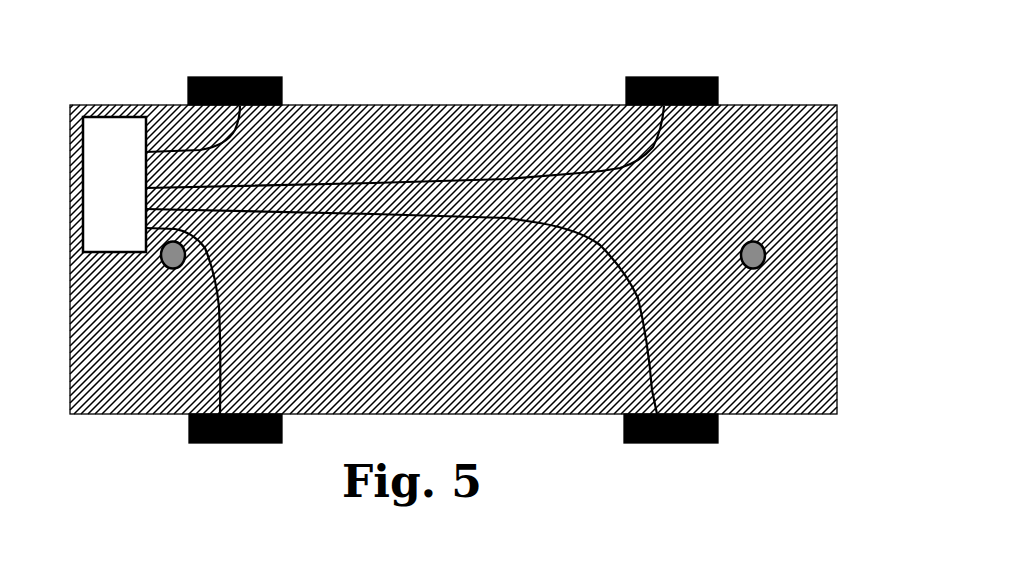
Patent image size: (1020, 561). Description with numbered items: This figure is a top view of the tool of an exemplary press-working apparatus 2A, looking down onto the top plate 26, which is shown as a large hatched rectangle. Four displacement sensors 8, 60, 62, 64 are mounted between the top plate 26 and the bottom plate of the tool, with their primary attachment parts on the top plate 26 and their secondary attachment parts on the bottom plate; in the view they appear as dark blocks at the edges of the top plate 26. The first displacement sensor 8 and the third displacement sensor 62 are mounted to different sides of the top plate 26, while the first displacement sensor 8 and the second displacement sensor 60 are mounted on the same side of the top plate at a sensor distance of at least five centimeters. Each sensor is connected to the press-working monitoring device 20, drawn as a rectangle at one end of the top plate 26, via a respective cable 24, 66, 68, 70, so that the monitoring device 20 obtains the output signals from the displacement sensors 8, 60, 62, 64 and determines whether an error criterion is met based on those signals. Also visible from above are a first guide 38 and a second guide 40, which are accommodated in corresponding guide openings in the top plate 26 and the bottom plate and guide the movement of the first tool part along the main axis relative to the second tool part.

The press-working apparatus 2A is at (380, 70).
The top plate 26 is at (147, 106).
The press-working monitoring device 20 is at (100, 208).
The third displacement sensor 62 is at (227, 78).
The displacement sensor 64 is at (640, 77).
The second displacement sensor 60 is at (190, 440).
The first displacement sensor 8 is at (647, 443).
The cable 68 is at (196, 148).
The cable 70 is at (595, 175).
The cable 24 is at (645, 350).
The cable 66 is at (213, 353).
The first guide 38 is at (160, 262).
The second guide 40 is at (765, 257).